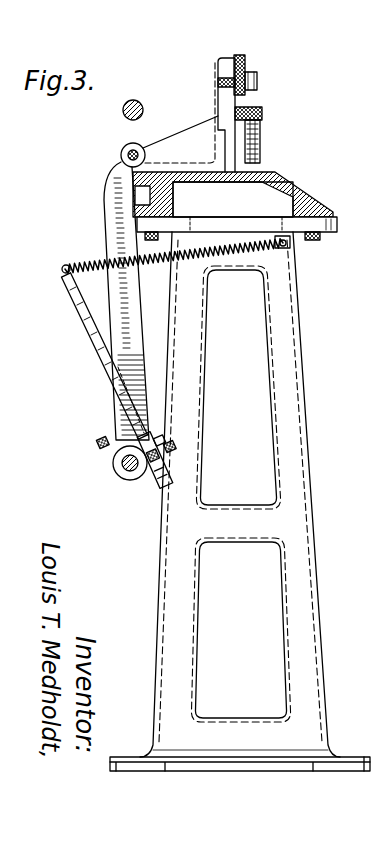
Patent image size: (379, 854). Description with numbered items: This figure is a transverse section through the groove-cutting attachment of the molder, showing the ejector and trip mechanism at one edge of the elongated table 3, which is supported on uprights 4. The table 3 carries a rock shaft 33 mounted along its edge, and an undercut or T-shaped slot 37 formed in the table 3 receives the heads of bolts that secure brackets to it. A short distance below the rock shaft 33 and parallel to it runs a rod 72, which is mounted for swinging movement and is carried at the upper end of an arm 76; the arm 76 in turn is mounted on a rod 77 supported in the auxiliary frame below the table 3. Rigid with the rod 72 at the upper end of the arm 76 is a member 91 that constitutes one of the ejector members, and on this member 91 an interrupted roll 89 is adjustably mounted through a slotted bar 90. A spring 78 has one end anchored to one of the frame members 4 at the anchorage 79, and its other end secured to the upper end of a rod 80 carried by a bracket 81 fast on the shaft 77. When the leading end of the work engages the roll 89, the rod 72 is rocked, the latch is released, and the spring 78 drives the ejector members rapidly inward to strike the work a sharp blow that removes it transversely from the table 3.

The table 3 is at (257, 168).
The uprights 4 is at (292, 478).
The rock shaft 33 is at (134, 99).
The T-shaped slot 37 is at (176, 198).
The rod 72 is at (122, 150).
The arm 76 is at (112, 203).
The rod 77 is at (120, 472).
The spring 78 is at (95, 265).
The spring anchorage 79 is at (288, 247).
The rod 80 is at (97, 335).
The bracket 81 is at (147, 482).
The interrupted roll 89 is at (260, 143).
The slotted bar 90 is at (246, 63).
The member 91 is at (218, 103).